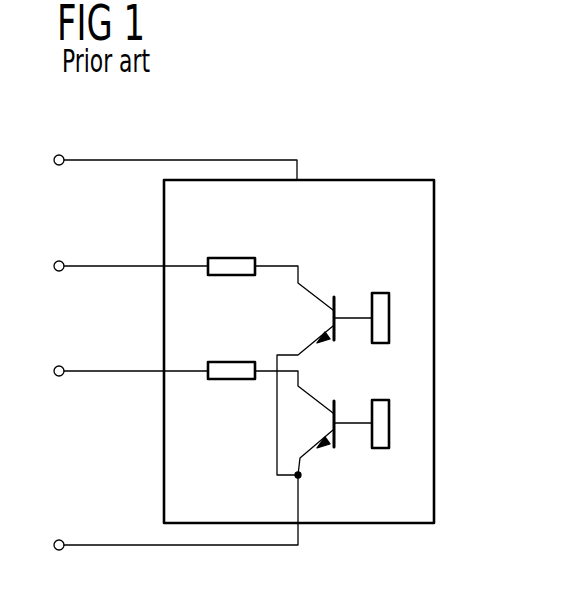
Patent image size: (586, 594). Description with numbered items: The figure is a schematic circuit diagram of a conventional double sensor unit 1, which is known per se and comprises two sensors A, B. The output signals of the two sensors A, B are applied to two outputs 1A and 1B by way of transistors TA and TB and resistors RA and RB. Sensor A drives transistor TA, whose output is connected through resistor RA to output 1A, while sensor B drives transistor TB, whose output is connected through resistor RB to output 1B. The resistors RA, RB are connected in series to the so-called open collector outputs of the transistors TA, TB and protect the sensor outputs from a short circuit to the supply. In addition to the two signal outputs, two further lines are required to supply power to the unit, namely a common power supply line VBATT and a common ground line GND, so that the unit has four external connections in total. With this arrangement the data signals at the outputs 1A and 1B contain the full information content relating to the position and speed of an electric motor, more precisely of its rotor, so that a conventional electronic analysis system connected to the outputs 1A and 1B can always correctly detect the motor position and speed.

The double sensor unit 1 is at (435, 353).
The resistor RA is at (231, 258).
The resistor RB is at (230, 381).
The transistor TA is at (328, 320).
The transistor TB is at (338, 406).
The sensor A is at (380, 293).
The sensor B is at (380, 448).
The common power supply line VBATT is at (175, 152).
The output 1A is at (131, 252).
The output 1B is at (131, 357).
The common ground line GND is at (176, 512).